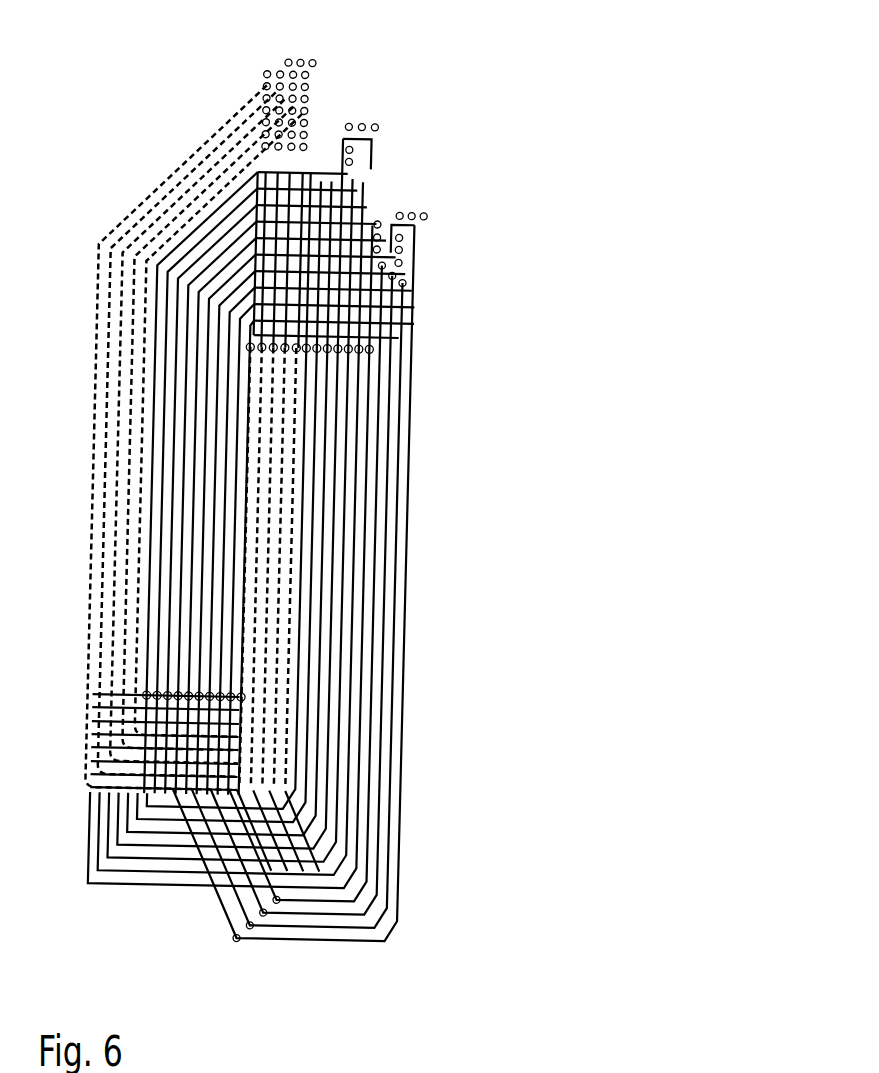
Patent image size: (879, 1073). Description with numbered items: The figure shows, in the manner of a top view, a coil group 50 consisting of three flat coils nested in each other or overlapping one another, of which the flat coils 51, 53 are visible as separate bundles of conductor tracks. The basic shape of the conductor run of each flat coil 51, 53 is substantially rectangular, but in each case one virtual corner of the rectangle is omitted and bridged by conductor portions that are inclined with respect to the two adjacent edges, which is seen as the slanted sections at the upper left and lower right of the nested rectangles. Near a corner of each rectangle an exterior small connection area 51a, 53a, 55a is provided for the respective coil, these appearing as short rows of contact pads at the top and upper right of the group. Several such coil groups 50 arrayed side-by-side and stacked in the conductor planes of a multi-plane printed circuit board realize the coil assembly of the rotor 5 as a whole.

The coil group 50 is at (535, 87).
The flat coil 51 is at (199, 119).
The connection area 51a is at (306, 49).
The flat coil 53 is at (178, 233).
The connection area 53a is at (368, 118).
The connection area 55a is at (421, 205).
The rotor 5 is at (418, 364).